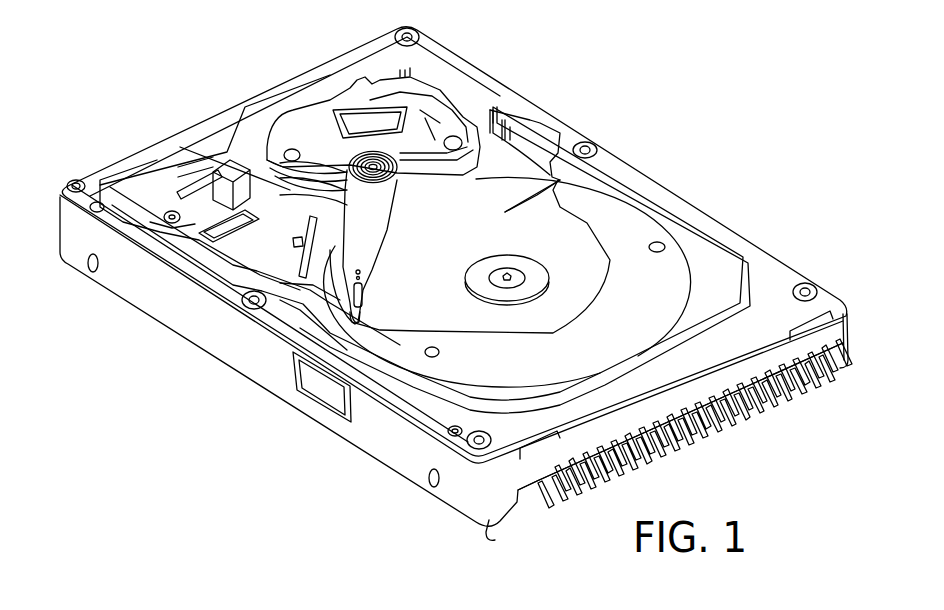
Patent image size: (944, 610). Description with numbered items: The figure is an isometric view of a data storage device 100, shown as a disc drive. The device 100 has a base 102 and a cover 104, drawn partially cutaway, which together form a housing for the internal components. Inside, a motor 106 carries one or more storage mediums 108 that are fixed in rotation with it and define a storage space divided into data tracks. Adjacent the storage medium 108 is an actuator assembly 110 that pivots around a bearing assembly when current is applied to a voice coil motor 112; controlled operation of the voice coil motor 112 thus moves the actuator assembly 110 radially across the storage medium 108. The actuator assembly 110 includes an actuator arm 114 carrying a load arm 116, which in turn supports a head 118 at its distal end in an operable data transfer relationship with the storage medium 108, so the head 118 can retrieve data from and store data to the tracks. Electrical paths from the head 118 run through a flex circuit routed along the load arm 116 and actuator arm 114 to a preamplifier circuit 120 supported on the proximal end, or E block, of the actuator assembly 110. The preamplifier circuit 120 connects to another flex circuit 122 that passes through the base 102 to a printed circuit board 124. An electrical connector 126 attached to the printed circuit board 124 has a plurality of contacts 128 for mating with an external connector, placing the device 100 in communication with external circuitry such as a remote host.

The data storage device 100 is at (516, 38).
The base 102 is at (177, 313).
The cover 104 is at (713, 257).
The motor 106 is at (513, 260).
The storage medium 108 is at (398, 184).
The actuator assembly 110 is at (388, 208).
The voice coil motor 112 is at (351, 103).
The actuator arm 114 is at (368, 250).
The load arm 116 is at (363, 287).
The head 118 is at (360, 312).
The preamplifier circuit 120 is at (235, 174).
The flex circuit 122 is at (172, 222).
The printed circuit board 124 is at (490, 528).
The electrical connector 126 is at (790, 427).
The contacts 128 is at (720, 412).